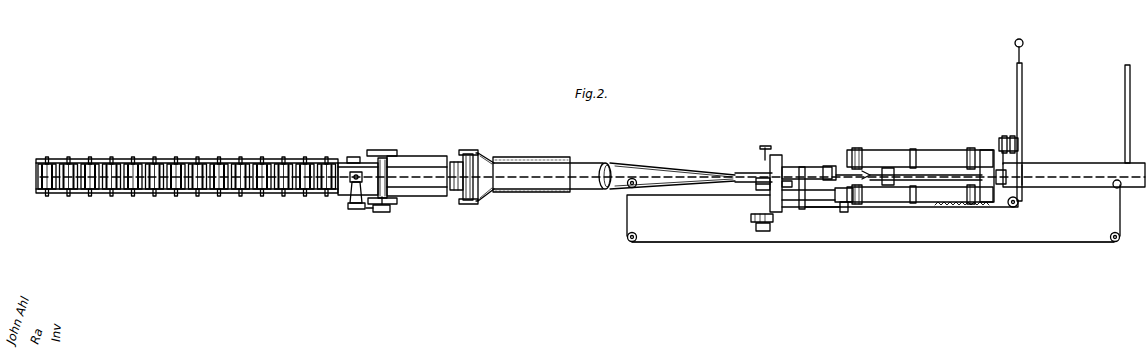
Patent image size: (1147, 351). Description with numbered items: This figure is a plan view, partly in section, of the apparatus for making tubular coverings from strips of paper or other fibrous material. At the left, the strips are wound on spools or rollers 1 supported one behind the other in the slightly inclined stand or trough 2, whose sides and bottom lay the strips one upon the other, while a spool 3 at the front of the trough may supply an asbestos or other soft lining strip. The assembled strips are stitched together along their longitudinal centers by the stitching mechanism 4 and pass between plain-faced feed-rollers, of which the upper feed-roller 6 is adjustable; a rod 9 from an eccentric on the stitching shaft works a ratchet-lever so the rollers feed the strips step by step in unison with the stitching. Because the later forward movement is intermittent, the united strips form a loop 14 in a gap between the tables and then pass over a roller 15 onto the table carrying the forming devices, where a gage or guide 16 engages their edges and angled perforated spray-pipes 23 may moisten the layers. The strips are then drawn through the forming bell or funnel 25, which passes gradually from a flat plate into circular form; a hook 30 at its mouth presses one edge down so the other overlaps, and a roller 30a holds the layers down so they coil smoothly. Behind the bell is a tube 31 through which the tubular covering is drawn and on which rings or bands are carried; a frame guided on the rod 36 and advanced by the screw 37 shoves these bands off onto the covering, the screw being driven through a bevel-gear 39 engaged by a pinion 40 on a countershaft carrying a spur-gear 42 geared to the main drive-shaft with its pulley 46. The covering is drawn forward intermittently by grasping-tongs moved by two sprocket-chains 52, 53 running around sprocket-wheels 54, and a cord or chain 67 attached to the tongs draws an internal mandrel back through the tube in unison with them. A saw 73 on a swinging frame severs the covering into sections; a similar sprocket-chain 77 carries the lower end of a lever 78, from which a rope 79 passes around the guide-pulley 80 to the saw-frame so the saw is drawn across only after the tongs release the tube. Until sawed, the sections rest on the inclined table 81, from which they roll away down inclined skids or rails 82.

The spools or rollers 1 is at (178, 165).
The stand or trough 2 is at (175, 192).
The spool 3 is at (322, 180).
The stitching or sewing mechanism 4 is at (352, 192).
The feed-roller 6 is at (393, 168).
The rod 9 is at (379, 212).
The loop 14 is at (458, 182).
The roller 15 is at (467, 158).
The gage or guide 16 is at (530, 160).
The spray-pipes 23 is at (484, 158).
The forming bell or funnel 25 is at (663, 180).
The hook 30 is at (768, 183).
The roller 30a is at (604, 186).
The tube 31 is at (790, 167).
The rod 36 is at (796, 210).
The screw 37 is at (803, 210).
The bevel-gear 39 is at (792, 184).
The pinion 40 is at (760, 192).
The spur-gear 42 is at (757, 218).
The pulley 46 is at (764, 232).
The sprocket-chain 52 is at (928, 203).
The sprocket-chain 53 is at (935, 156).
The sprocket-wheels 54 is at (846, 158).
The cord or chain 67 is at (897, 240).
The saw 73 is at (1000, 132).
The sprocket-chain 77 is at (892, 190).
The lever 78 is at (948, 206).
The rope 79 is at (1007, 206).
The guide-pulley 80 is at (977, 206).
The inclined table 81 is at (1073, 188).
The inclined skids or rails 82 is at (1025, 153).